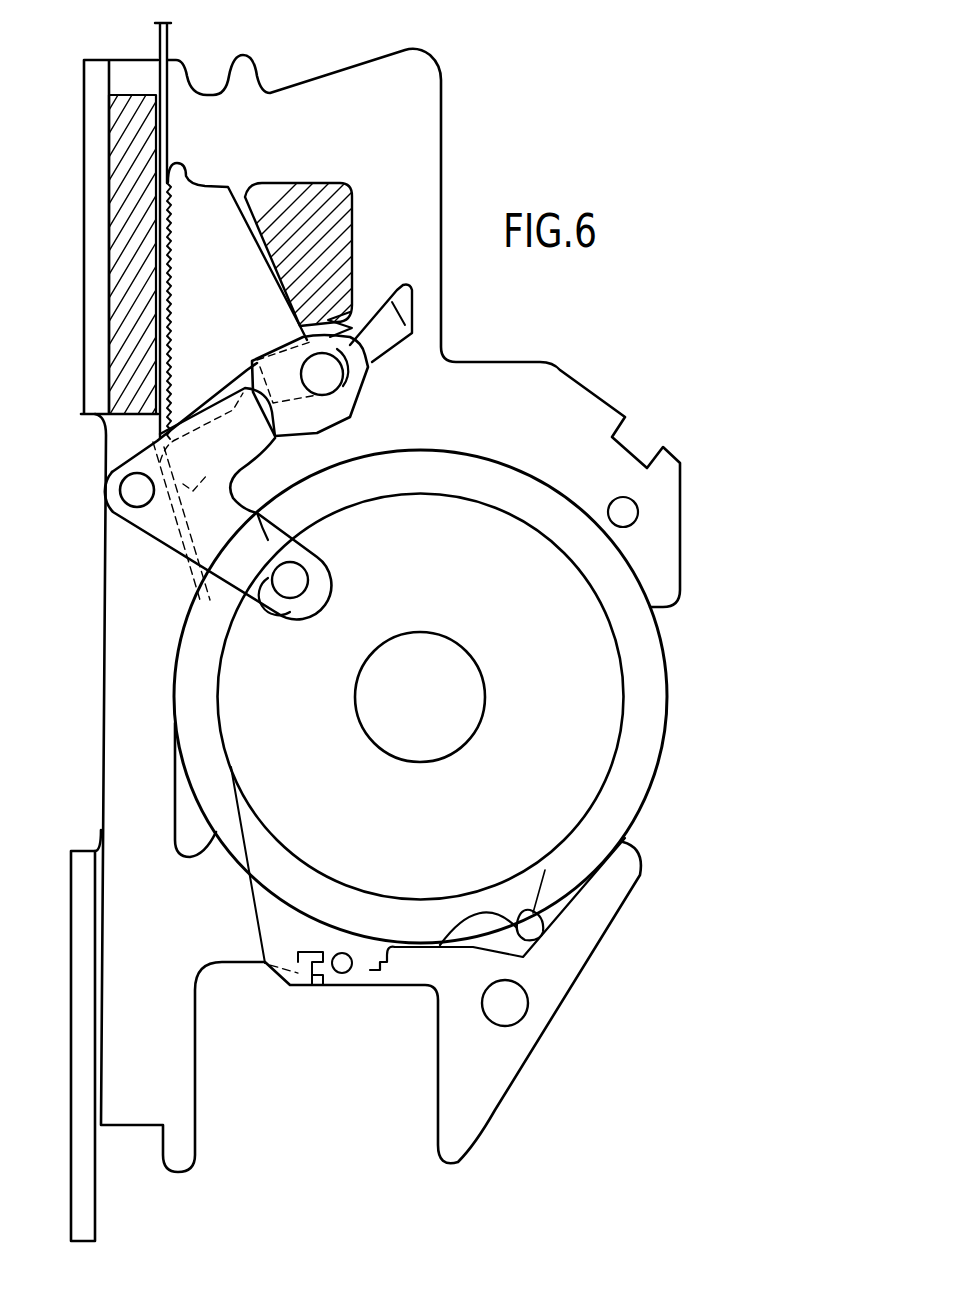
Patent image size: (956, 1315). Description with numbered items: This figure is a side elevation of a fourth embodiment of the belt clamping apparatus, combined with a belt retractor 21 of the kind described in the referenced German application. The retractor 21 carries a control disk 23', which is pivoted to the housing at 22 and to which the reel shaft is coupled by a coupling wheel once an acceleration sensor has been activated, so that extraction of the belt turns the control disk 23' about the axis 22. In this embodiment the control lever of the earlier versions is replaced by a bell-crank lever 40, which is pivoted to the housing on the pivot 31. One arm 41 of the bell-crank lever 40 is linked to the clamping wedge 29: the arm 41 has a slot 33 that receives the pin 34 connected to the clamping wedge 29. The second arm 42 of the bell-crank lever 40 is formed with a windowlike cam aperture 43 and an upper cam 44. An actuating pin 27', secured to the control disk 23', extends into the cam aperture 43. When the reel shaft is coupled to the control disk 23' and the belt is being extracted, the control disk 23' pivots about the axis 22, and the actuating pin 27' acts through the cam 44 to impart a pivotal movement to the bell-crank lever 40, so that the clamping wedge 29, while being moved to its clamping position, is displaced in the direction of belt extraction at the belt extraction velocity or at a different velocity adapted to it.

The belt retractor 21 is at (690, 665).
The pivot 22 is at (634, 510).
The control disk 23' is at (420, 675).
The actuating pin 27' is at (325, 580).
The clamping wedge 29 is at (205, 225).
The pivot 31 is at (130, 492).
The slot 33 is at (369, 359).
The pin 34 is at (171, 40).
The bell-crank lever 40 is at (173, 510).
The arm 41 is at (330, 413).
The second arm 42 is at (262, 510).
The cam aperture 43 is at (283, 607).
The upper cam 44 is at (290, 547).